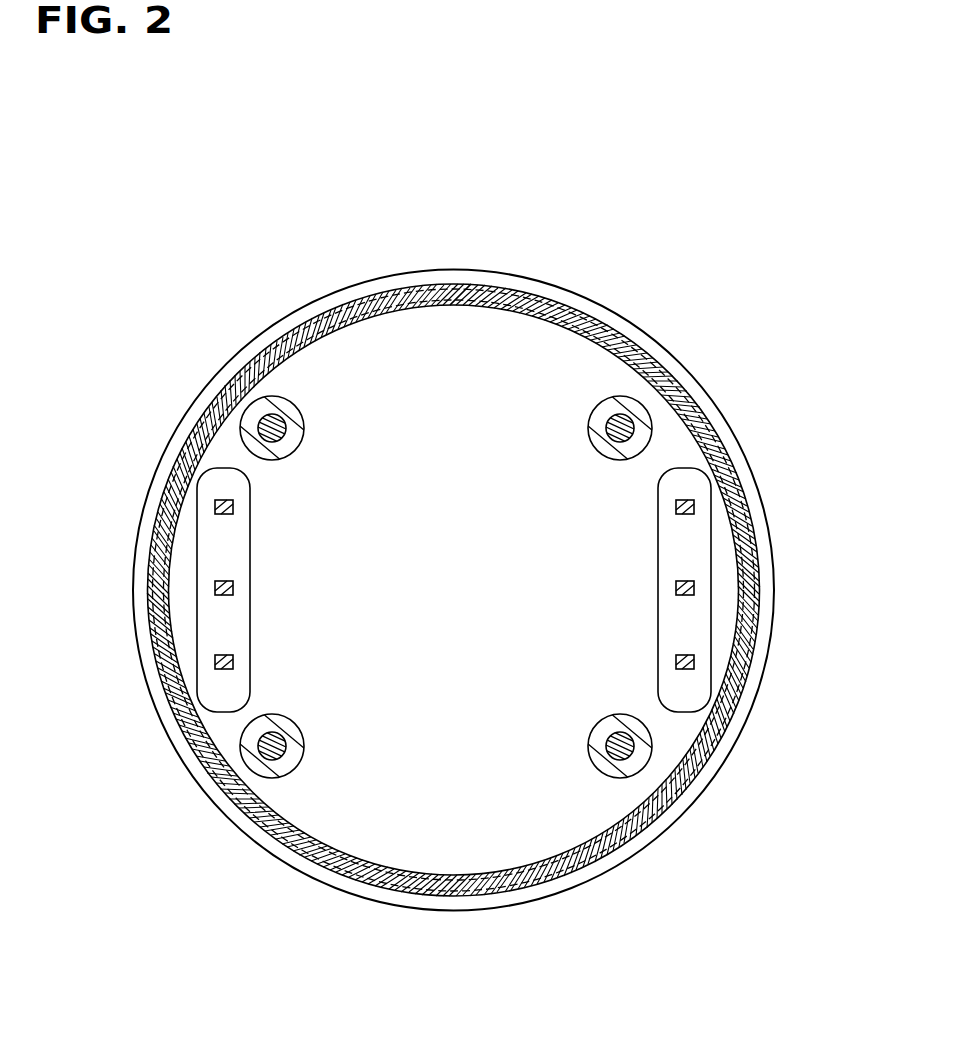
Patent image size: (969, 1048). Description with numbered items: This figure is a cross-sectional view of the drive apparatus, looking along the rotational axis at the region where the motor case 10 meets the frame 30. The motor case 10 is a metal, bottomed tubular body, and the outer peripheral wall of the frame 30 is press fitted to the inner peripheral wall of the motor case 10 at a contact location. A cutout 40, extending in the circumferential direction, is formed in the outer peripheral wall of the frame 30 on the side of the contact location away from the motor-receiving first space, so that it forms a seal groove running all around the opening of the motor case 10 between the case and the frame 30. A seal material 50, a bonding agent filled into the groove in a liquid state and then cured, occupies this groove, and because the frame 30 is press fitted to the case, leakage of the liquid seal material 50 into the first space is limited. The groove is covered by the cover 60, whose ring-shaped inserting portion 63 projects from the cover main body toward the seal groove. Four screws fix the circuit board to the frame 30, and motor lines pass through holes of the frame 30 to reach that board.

The motor case 10 is at (516, 283).
The frame 30 is at (449, 737).
The cutout 40 is at (347, 320).
The seal material 50 is at (555, 308).
The cover 60 is at (462, 292).
The inserting portion 63 is at (460, 294).